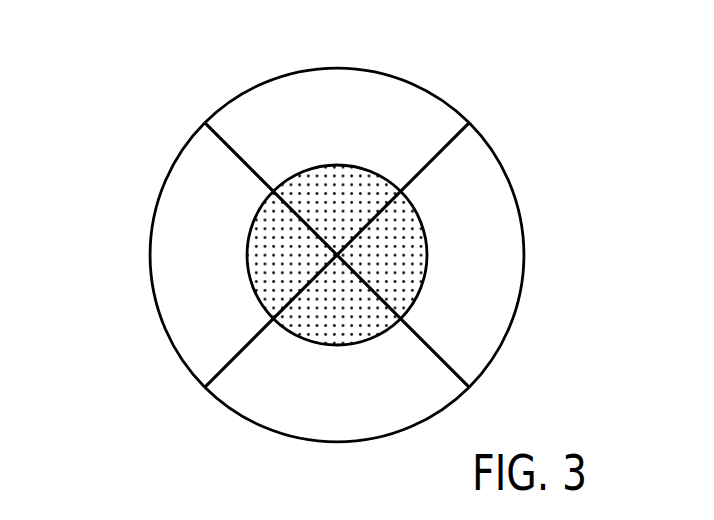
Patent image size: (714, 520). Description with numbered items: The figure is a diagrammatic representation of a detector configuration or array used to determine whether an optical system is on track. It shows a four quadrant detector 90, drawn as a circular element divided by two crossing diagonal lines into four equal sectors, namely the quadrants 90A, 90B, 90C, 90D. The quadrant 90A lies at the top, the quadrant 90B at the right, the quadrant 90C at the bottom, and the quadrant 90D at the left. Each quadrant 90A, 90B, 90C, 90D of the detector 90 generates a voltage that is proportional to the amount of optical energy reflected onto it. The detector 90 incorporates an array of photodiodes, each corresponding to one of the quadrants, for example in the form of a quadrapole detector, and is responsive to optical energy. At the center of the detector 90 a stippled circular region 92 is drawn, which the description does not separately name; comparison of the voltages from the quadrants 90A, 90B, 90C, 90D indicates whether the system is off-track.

The four quadrant detector 90 is at (160, 57).
The quadrant 90A is at (337, 67).
The quadrant 90B is at (524, 254).
The quadrant 90C is at (335, 441).
The quadrant 90D is at (150, 253).
The central core region 92 is at (338, 165).